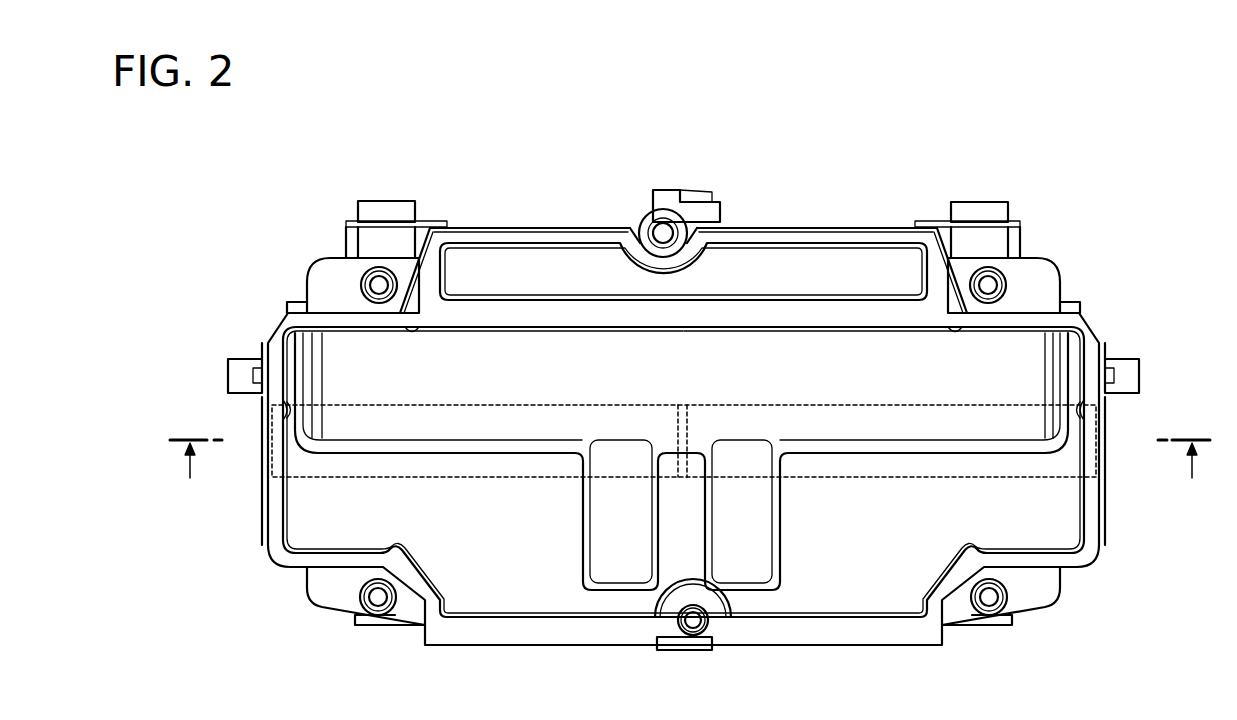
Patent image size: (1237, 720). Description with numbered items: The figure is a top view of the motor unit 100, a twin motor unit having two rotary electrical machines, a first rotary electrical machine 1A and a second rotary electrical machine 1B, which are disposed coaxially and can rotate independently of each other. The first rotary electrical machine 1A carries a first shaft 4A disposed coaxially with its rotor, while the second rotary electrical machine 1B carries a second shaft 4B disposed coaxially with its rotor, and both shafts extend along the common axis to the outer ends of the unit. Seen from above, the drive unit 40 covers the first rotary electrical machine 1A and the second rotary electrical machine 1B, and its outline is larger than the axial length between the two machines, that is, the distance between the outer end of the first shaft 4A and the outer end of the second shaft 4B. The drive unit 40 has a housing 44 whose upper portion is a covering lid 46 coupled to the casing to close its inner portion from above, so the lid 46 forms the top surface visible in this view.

The motor unit 100 is at (1133, 89).
The first rotary electrical machine 1A is at (345, 240).
The second rotary electrical machine 1B is at (1010, 224).
The first shaft 4A is at (348, 418).
The second shaft 4B is at (1018, 418).
The drive unit 40 is at (1088, 322).
The housing 44 is at (787, 289).
The covering lid 46 is at (1000, 388).